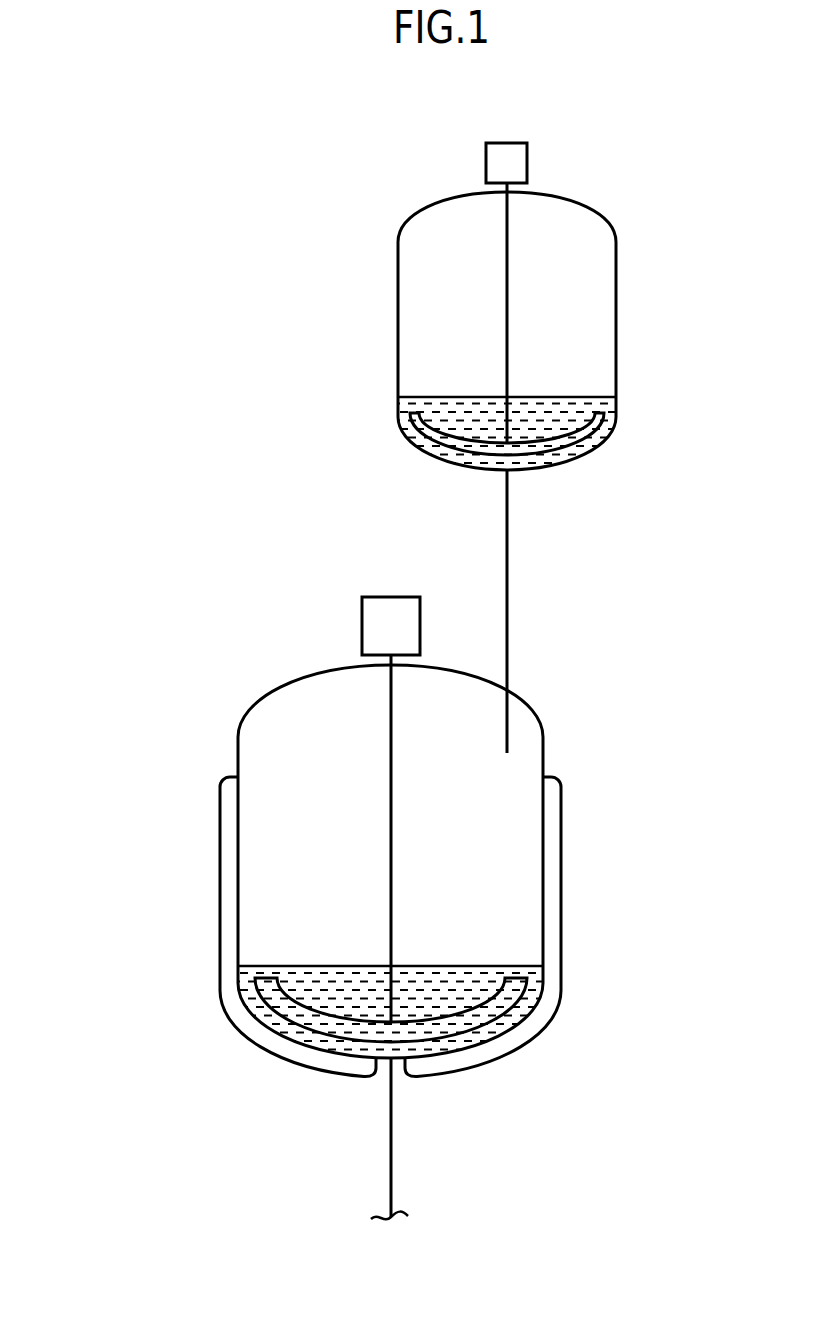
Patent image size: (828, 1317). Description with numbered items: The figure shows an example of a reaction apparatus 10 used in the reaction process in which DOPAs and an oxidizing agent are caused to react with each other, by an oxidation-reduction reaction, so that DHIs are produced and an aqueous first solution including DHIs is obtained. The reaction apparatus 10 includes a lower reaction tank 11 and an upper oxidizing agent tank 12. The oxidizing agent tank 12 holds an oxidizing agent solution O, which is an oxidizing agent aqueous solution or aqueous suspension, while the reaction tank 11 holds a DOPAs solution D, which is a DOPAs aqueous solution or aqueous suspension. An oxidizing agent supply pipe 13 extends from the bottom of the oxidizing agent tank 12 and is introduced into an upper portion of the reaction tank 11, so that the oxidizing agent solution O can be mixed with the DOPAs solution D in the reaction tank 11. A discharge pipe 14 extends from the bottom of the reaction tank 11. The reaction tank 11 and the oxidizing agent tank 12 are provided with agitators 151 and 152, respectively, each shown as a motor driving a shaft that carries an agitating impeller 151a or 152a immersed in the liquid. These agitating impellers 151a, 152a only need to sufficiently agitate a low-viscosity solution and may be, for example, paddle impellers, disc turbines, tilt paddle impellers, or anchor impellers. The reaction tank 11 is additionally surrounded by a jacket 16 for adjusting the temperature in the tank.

The reaction apparatus 10 is at (136, 322).
The reaction tank 11 is at (253, 703).
The oxidizing agent tank 12 is at (604, 214).
The oxidizing agent supply pipe 13 is at (507, 570).
The discharge pipe 14 is at (391, 1140).
The jacket 16 is at (553, 883).
The agitator 151 is at (362, 624).
The agitating impeller 151a is at (461, 1020).
The agitator 152 is at (486, 157).
The agitating impeller 152a is at (553, 440).
The oxidizing agent solution O is at (612, 406).
The DOPAs solution D is at (236, 996).